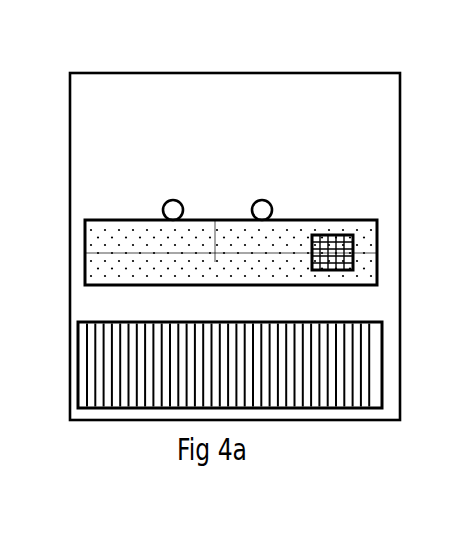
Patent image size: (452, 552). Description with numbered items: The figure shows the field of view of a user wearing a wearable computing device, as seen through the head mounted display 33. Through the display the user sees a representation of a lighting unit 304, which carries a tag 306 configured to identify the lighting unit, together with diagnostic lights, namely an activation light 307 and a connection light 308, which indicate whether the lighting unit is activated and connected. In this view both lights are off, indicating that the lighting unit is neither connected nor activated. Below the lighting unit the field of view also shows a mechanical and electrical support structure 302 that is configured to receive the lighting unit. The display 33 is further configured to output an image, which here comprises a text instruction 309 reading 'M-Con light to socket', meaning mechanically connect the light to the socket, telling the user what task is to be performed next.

The head mounted display 33 is at (392, 422).
The mechanical and electrical support structure 302 is at (122, 375).
The lighting unit 304 is at (115, 245).
The tag 306 is at (320, 256).
The activation light 307 is at (173, 210).
The connection light 308 is at (262, 210).
The text instruction 309 is at (193, 83).